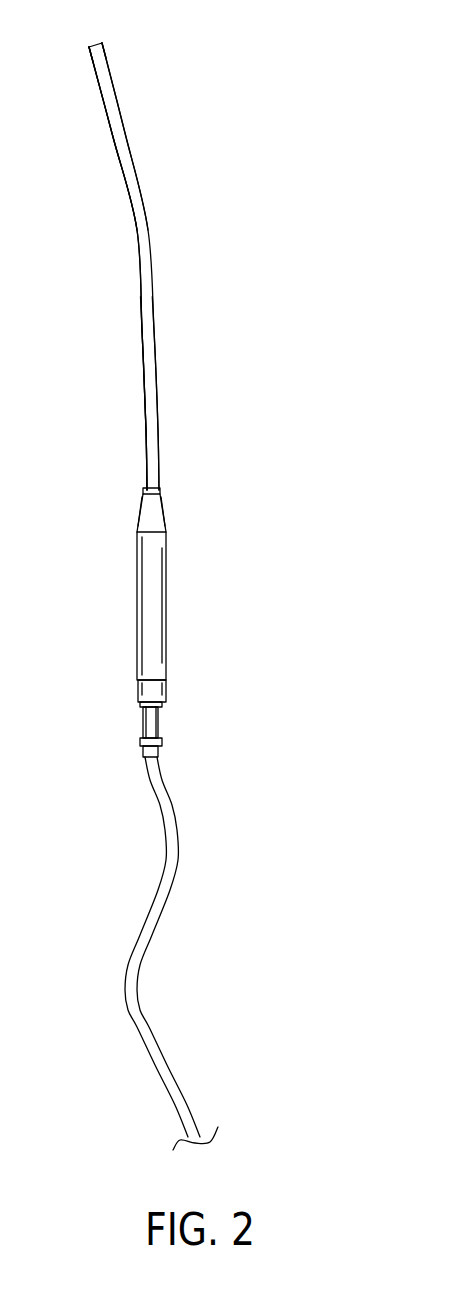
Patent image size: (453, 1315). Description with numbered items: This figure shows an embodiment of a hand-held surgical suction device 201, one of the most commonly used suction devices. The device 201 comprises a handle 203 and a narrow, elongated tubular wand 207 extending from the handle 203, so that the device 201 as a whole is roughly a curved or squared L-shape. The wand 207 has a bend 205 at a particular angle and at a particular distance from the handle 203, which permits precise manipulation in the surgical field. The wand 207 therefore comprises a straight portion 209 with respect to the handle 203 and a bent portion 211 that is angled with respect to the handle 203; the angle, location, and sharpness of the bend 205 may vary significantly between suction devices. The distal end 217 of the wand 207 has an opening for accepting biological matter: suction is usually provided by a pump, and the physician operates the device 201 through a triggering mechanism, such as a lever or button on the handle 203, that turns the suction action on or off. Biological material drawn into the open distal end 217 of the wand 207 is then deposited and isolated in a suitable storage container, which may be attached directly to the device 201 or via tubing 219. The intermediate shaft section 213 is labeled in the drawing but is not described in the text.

The suction device 201 is at (211, 577).
The handle 203 is at (147, 615).
The bend 205 is at (153, 258).
The wand 207 is at (82, 50).
The straight portion 209 is at (142, 747).
The bent portion 211 is at (113, 43).
The proximal shaft section 213 is at (167, 288).
The distal end 217 is at (92, 45).
The tubing 219 is at (206, 953).